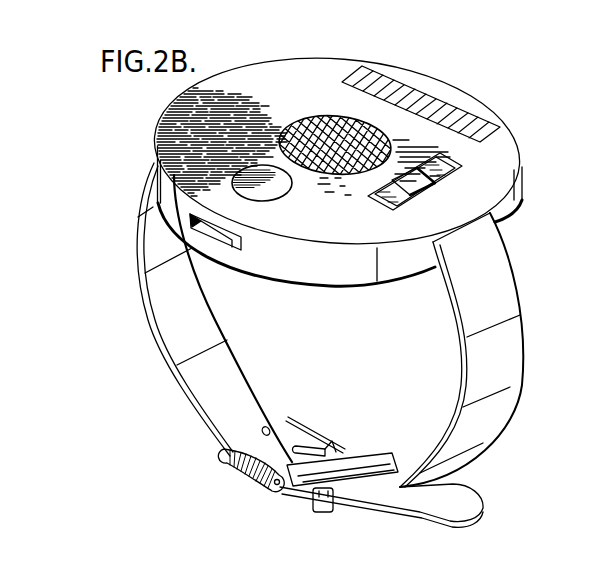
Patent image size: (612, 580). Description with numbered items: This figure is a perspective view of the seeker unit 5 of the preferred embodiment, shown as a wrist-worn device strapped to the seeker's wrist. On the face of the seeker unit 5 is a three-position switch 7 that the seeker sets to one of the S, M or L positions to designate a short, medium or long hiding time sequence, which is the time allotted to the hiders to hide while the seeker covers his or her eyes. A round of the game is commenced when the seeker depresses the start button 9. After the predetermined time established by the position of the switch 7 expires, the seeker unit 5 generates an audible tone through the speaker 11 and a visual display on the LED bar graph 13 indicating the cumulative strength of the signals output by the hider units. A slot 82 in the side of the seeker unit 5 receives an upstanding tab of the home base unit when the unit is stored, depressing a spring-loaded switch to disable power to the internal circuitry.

The seeker unit 5 is at (477, 61).
The three-position switch 7 is at (481, 170).
The start button 9 is at (280, 185).
The speaker 11 is at (291, 126).
The LED bar graph 13 is at (393, 88).
The slot 82 is at (231, 243).